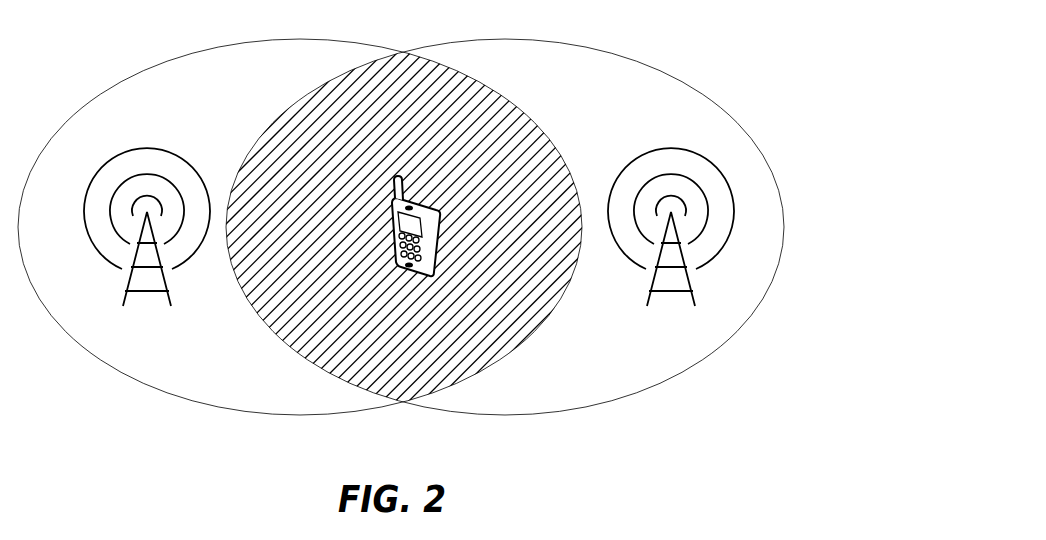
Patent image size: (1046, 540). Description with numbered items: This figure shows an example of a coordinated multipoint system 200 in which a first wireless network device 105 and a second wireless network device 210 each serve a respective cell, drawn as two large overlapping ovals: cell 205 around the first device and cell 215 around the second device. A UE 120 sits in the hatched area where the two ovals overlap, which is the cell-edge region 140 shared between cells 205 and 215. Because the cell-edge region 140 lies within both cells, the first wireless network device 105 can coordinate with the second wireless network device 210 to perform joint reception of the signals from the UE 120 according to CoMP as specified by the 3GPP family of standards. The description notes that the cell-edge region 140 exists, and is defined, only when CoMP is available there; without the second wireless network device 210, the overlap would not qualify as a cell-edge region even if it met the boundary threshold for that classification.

The coordinated multipoint system 200 is at (668, 28).
The first wireless network device 105 is at (147, 290).
The second wireless network device 210 is at (672, 293).
The UE 120 is at (425, 280).
The cell 205 is at (230, 409).
The cell 215 is at (605, 402).
The cell-edge region 140 is at (355, 383).